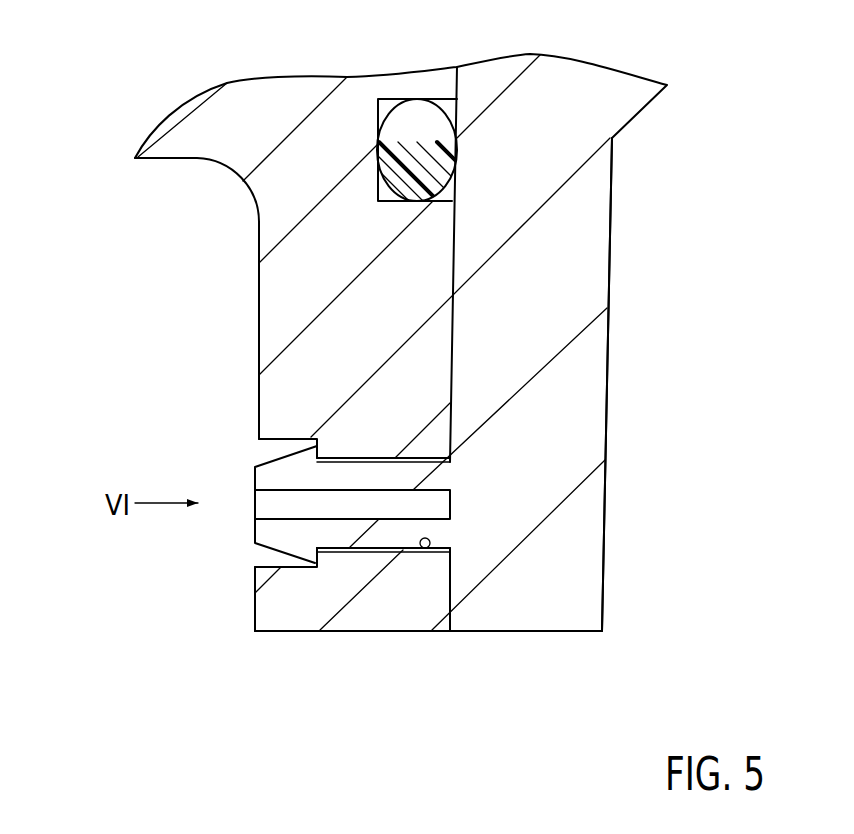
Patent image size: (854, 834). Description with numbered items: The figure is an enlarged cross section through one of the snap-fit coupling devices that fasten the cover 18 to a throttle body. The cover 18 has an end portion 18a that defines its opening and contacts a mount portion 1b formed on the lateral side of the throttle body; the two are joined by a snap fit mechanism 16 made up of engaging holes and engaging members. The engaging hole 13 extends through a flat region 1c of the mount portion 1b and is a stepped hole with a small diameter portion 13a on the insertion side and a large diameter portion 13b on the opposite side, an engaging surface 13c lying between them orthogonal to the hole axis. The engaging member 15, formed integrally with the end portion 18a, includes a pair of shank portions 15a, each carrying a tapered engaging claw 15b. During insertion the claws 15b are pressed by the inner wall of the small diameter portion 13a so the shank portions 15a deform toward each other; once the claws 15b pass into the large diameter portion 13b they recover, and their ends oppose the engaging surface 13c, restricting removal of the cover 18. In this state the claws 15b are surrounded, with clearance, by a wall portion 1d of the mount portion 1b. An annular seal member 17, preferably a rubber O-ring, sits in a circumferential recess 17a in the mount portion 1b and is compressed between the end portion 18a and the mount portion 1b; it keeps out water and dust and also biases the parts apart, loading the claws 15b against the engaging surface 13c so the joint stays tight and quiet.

The mount portion 1b is at (290, 193).
The flat region 1c is at (357, 631).
The wall portion 1d is at (273, 577).
The engaging hole 13 is at (345, 565).
The small diameter portion 13a is at (427, 552).
The large diameter portion 13b is at (267, 445).
The engaging surface 13c is at (314, 556).
The engaging member 15 is at (285, 477).
The shank portion 15a is at (383, 470).
The engaging claw 15b is at (288, 462).
The snap fit mechanism 16 is at (225, 533).
The seal member 17 is at (420, 98).
The circumferential recess 17a is at (387, 101).
The cover 18 is at (597, 286).
The end portion 18a is at (548, 610).